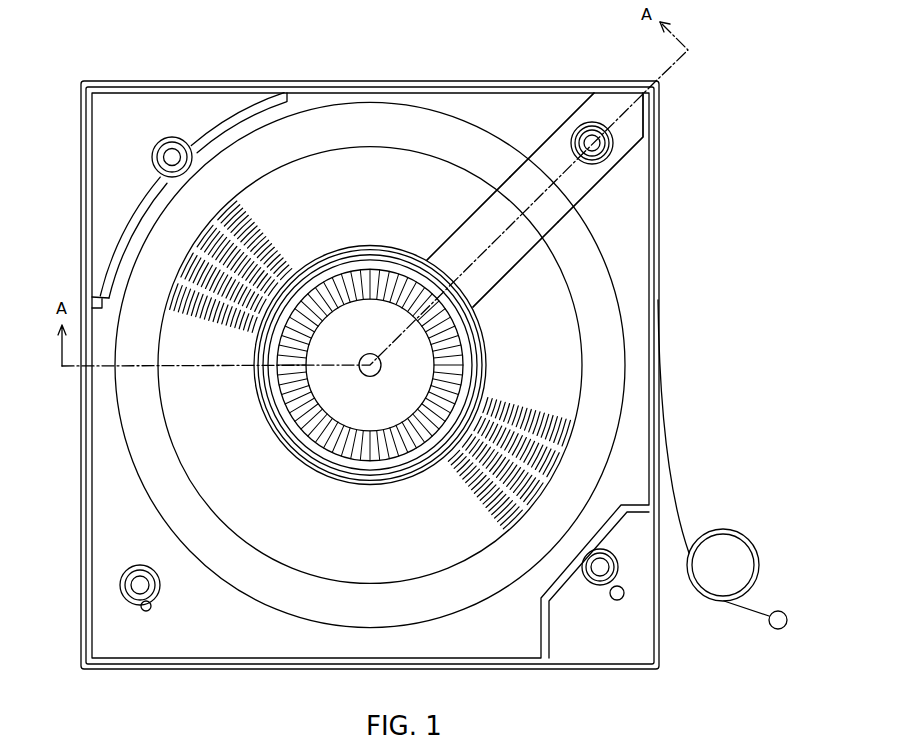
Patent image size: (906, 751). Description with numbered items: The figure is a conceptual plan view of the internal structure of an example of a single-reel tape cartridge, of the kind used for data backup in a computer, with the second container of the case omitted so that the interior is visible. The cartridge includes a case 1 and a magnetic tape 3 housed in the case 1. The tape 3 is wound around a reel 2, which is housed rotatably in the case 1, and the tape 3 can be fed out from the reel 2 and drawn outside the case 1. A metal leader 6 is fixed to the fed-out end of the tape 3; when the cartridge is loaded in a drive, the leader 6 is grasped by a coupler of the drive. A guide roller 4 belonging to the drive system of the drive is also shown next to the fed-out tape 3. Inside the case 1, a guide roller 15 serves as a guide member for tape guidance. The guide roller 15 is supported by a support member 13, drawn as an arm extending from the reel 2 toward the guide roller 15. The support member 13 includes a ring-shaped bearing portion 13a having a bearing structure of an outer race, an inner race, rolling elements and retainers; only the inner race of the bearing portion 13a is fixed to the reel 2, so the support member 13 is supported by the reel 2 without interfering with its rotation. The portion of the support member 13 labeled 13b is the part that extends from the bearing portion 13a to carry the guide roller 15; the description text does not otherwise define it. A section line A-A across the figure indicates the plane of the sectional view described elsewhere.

The case 1 is at (456, 81).
The reel 2 is at (363, 113).
The magnetic tape 3 is at (675, 470).
The guide roller of a drive system 4 is at (732, 533).
The metal leader 6 is at (774, 629).
The support member 13 is at (595, 210).
The bearing portion 13a is at (490, 327).
The arm outer portion 13b is at (575, 195).
The guide roller 15 is at (613, 143).